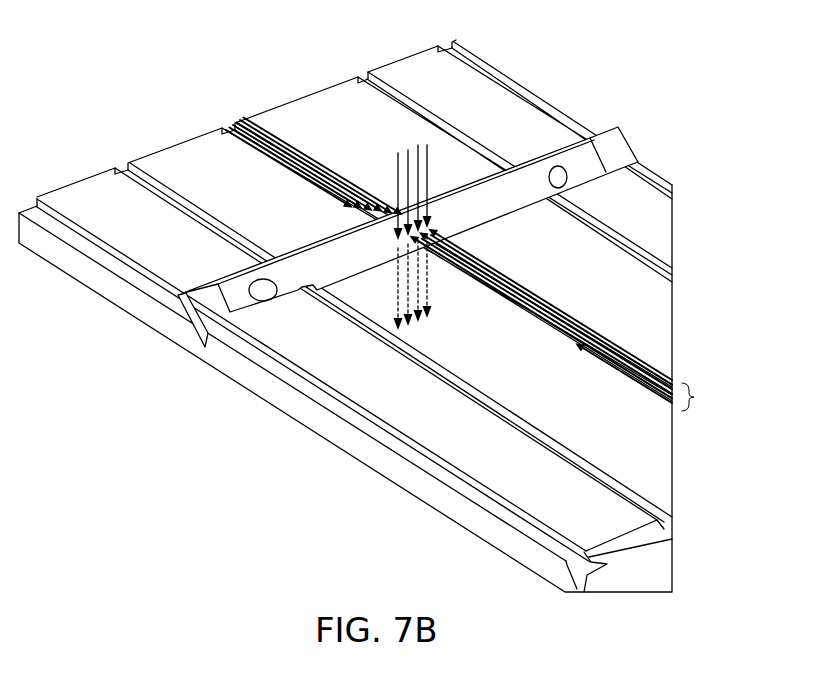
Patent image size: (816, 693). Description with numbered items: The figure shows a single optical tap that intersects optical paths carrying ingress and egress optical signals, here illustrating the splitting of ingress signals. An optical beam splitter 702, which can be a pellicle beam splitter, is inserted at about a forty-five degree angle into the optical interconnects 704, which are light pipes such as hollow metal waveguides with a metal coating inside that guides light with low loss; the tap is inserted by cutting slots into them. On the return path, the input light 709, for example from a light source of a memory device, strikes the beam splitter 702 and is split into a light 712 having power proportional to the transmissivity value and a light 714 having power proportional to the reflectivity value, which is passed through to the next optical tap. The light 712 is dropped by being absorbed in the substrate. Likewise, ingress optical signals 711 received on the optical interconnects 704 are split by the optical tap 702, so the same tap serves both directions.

The optical beam splitter 702 is at (578, 170).
The optical interconnects 704 is at (715, 401).
The input light 709 is at (412, 182).
The ingress optical signals 711 is at (320, 160).
The light having power proportional to the transmissivity value 712 is at (425, 295).
The light having power proportional to the reflectivity value 714 is at (623, 352).